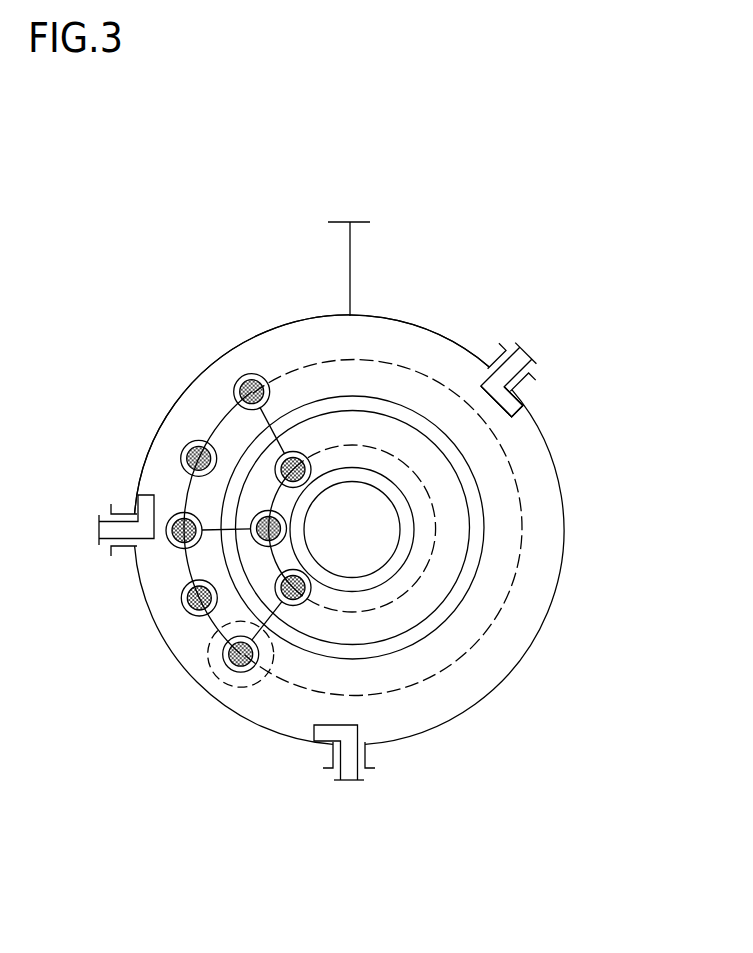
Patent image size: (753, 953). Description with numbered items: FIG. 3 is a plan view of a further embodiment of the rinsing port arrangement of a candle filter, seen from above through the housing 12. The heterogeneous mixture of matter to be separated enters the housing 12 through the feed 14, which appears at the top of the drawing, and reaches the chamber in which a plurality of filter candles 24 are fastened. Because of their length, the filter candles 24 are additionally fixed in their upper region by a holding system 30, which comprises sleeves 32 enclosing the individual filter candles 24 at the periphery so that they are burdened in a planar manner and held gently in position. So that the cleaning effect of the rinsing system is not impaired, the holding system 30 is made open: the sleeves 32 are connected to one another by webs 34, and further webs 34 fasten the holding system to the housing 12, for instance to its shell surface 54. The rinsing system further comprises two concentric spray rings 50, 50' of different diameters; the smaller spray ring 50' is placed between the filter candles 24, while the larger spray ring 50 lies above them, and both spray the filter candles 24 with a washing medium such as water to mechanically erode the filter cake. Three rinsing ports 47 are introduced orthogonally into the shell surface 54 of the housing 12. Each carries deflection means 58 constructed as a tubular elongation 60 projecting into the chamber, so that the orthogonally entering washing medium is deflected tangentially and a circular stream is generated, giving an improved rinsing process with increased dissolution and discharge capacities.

The housing 12 is at (382, 529).
The feed 14 is at (371, 249).
The filter candles 24 is at (188, 446).
The holding system 30 is at (234, 696).
The sleeves 32 is at (142, 607).
The webs 34 is at (206, 626).
The rinsing ports 47 is at (90, 531).
The spray ring 50 is at (426, 527).
The spray ring 50' is at (448, 562).
The shell surface 54 is at (312, 384).
The deflection means 58 is at (566, 391).
The tubular elongation 60 is at (579, 391).